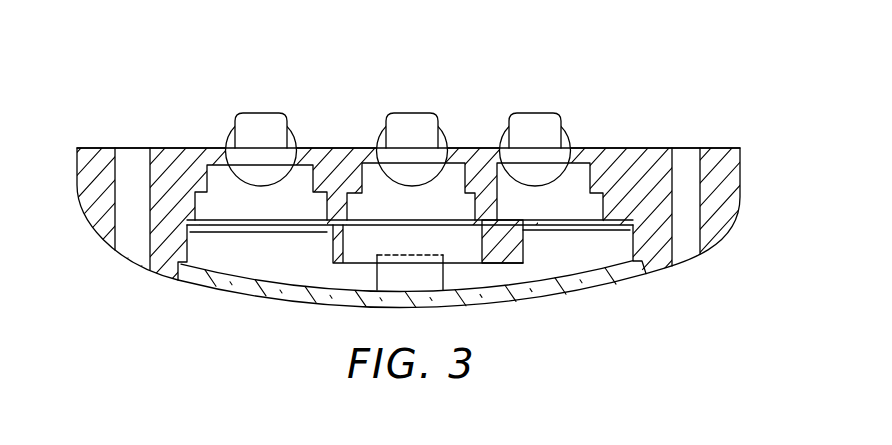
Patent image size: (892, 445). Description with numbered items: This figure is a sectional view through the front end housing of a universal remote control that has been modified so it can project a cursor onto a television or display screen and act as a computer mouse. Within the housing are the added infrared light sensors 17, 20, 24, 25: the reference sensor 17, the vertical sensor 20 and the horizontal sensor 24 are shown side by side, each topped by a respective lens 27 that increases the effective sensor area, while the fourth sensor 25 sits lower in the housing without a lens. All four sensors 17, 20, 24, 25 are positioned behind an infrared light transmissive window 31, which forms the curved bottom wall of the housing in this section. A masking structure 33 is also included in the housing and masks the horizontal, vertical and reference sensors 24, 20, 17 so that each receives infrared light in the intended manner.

The infrared light sensor 17 is at (266, 114).
The infrared light sensor 20 is at (430, 82).
The infrared light sensor 24 is at (552, 81).
The lens 27 is at (280, 178).
The masking structure 33 is at (524, 250).
The infrared light sensor 25 is at (397, 280).
The infrared light transmissive window 31 is at (552, 297).